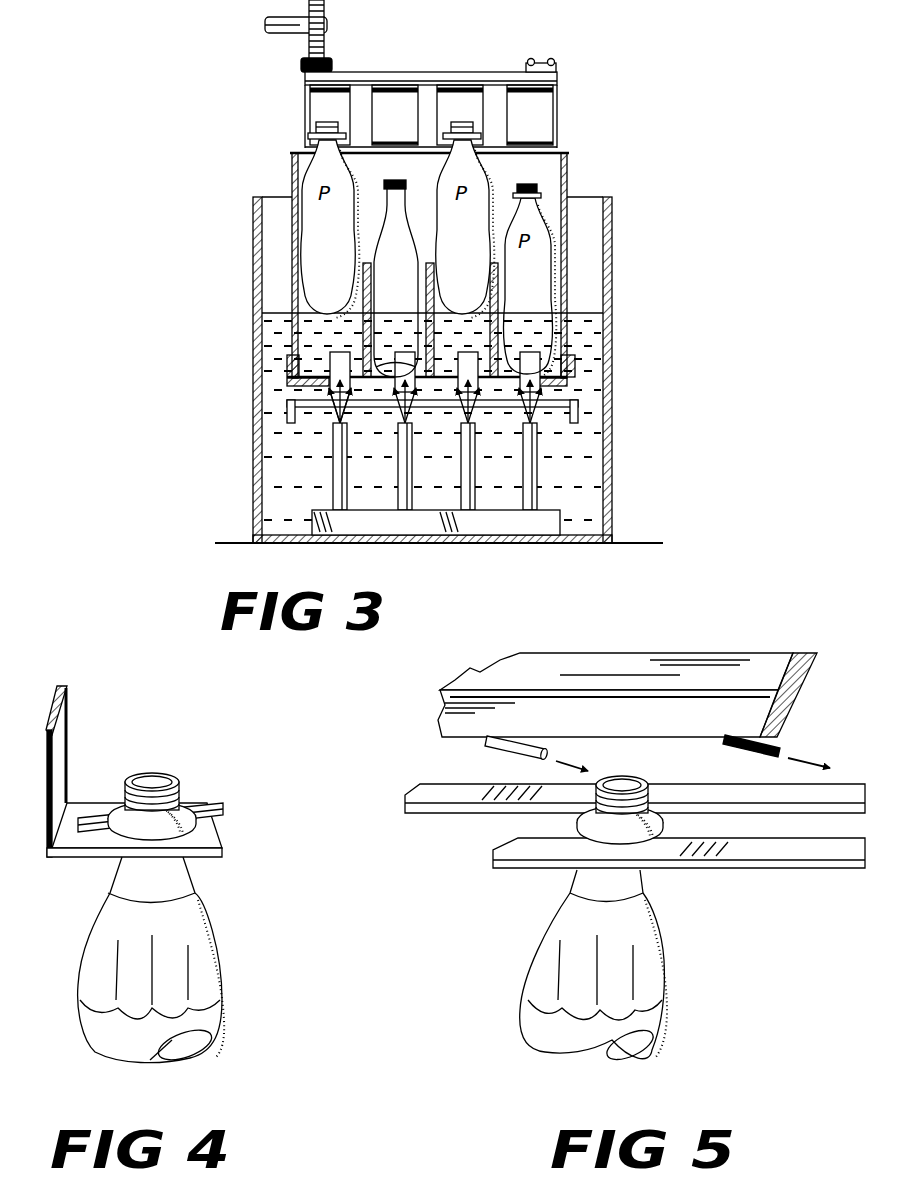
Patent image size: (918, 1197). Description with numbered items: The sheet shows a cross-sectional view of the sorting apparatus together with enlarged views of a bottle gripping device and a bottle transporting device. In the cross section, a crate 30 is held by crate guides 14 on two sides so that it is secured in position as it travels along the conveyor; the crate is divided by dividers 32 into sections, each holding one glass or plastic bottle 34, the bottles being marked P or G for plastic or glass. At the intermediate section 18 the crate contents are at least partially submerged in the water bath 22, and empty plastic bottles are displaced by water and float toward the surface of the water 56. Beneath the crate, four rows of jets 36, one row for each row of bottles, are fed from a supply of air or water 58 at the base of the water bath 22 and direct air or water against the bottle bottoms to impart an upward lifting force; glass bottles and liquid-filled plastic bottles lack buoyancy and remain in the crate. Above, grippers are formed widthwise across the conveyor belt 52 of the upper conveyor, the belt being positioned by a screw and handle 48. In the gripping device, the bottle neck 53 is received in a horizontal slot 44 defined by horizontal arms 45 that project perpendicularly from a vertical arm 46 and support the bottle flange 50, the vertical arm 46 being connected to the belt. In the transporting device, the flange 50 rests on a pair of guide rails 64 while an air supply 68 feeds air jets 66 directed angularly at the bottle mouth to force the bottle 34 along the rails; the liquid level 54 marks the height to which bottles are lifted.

In FIG. 3, the crate guides 14 is at (285, 372).
In FIG. 3, the intermediate section 18 is at (582, 402).
In FIG. 3, the water bath 22 is at (606, 262).
In FIG. 3, the crate 30 is at (568, 222).
In FIG. 3, the dividers 32 is at (364, 200).
In FIG. 4, the bottle 34 is at (230, 960).
In FIG. 5, the bottle 34 is at (528, 953).
In FIG. 3, the jets 36 is at (335, 470).
In FIG. 3, the horizontal slot 44 is at (308, 142).
In FIG. 4, the horizontal slot 44 is at (214, 829).
In FIG. 4, the horizontal arms 45 is at (224, 850).
In FIG. 3, the vertical arm 46 is at (312, 107).
In FIG. 4, the vertical arm 46 is at (67, 722).
In FIG. 3, the adjusting screw handle 48 is at (290, 36).
In FIG. 3, the bottle flange 50 is at (540, 190).
In FIG. 4, the bottle flange 50 is at (190, 797).
In FIG. 5, the bottle flange 50 is at (692, 774).
In FIG. 3, the conveyor belt 52 is at (410, 76).
In FIG. 4, the bottle neck 53 is at (124, 862).
In FIG. 5, the bottle neck 53 is at (645, 875).
In FIG. 3, the liquid level 54 is at (576, 315).
In FIG. 3, the surface of the water 56 is at (600, 500).
In FIG. 3, the supply of air or water 58 is at (512, 528).
In FIG. 5, the guide rails 64 is at (797, 807).
In FIG. 5, the air jets 66 is at (495, 750).
In FIG. 5, the air supply 68 is at (645, 662).